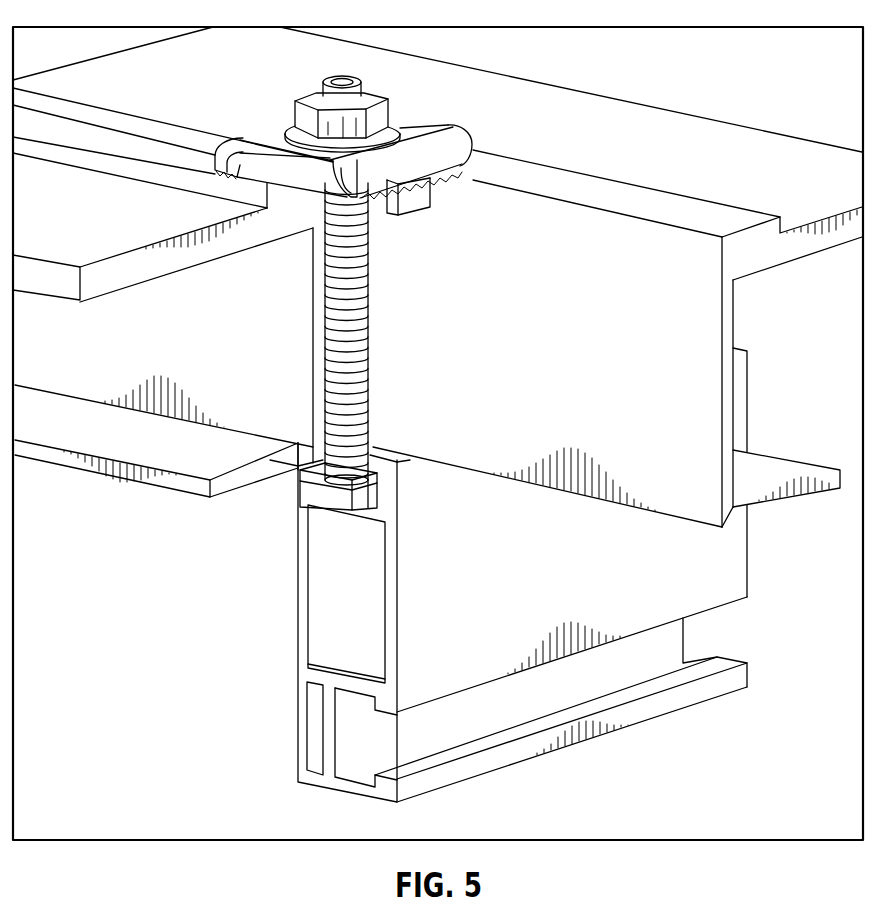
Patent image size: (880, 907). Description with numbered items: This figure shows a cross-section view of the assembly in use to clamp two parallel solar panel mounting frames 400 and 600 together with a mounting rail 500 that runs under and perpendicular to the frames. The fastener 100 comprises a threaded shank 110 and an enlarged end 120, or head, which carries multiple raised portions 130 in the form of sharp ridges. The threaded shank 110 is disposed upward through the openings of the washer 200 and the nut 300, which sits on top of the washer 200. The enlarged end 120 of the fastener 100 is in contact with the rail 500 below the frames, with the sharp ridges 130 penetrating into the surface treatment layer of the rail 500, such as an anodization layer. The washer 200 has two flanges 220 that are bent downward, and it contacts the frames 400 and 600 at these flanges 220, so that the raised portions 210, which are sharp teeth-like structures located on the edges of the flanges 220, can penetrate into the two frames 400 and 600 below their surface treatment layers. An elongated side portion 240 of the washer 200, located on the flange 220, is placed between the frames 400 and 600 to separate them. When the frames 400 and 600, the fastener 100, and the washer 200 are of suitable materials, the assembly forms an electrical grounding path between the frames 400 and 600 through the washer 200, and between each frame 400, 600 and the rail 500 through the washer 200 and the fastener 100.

The fastener 100 is at (403, 368).
The shank 110 is at (370, 318).
The enlarged end 120 is at (298, 513).
The raised portions 130 is at (316, 492).
The washer 200 is at (397, 157).
The raised portions 210 is at (483, 163).
The flanges 220 is at (470, 137).
The elongated side portions 240 is at (414, 198).
The nut 300 is at (293, 108).
The solar panel mounting frame 400 is at (263, 410).
The mounting rail 500 is at (737, 552).
The solar panel mounting frame 600 is at (736, 303).